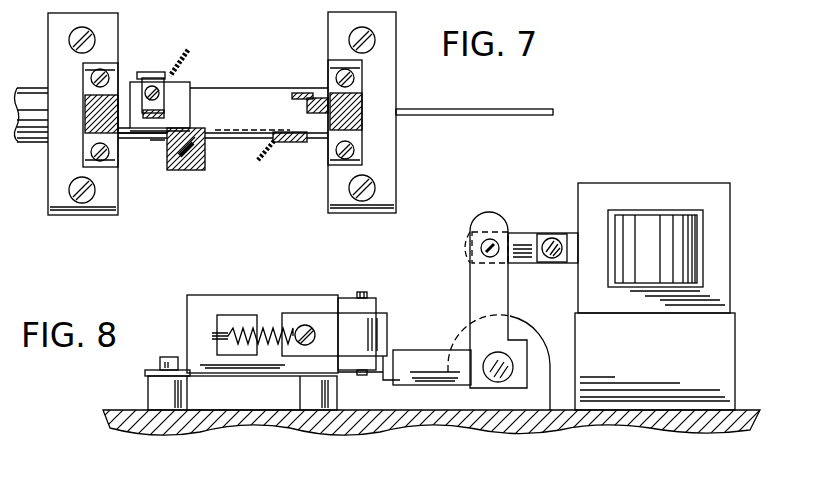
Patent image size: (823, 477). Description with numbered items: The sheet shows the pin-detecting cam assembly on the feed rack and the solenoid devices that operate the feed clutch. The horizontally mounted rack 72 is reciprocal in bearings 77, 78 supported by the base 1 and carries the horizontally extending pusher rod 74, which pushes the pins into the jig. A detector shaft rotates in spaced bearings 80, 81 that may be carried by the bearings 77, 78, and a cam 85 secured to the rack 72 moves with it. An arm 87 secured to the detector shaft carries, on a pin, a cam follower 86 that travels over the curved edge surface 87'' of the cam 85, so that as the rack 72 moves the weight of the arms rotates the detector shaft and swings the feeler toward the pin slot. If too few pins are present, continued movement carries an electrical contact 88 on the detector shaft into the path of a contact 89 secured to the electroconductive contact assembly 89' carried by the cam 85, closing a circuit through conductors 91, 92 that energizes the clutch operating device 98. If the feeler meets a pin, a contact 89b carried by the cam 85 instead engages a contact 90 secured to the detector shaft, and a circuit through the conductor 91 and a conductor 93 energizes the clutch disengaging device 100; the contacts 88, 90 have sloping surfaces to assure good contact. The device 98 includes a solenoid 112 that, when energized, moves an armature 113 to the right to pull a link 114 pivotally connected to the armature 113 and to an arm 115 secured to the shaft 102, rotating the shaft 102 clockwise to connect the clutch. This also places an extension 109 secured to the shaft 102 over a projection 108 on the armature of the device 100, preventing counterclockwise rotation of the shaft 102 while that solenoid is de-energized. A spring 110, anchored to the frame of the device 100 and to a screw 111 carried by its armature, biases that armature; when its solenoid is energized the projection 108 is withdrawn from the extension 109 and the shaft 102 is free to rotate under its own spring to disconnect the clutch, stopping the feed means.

In FIG. 8, the base 1 is at (160, 426).
In FIG. 7, the rack 72 is at (255, 80).
In FIG. 7, the pusher rod 74 is at (470, 118).
In FIG. 7, the bearing 77 is at (58, 187).
In FIG. 7, the bearing 78 is at (397, 167).
In FIG. 7, the bearing 80 is at (85, 110).
In FIG. 7, the bearing 81 is at (364, 112).
In FIG. 7, the cam 85 is at (190, 98).
In FIG. 7, the cam follower 86 is at (167, 158).
In FIG. 7, the arm 87 is at (186, 164).
In FIG. 7, the shoulder 87'' is at (142, 149).
In FIG. 7, the electrical contact 88 is at (290, 146).
In FIG. 7, the clamp 89 is at (177, 85).
In FIG. 7, the contact 89b is at (150, 72).
In FIG. 7, the electroconductive contact assembly 89' is at (186, 117).
In FIG. 7, the contact 90 is at (320, 97).
In FIG. 7, the conductor 91 is at (262, 157).
In FIG. 7, the conductor 92 is at (172, 70).
In FIG. 7, the conductor 93 is at (296, 90).
In FIG. 8, the clutch operating device 98 is at (655, 174).
In FIG. 8, the clutch disengaging device 100 is at (180, 297).
In FIG. 8, the shaft 102 is at (496, 352).
In FIG. 8, the projection 108 is at (384, 380).
In FIG. 8, the extension 109 is at (412, 350).
In FIG. 8, the spring 110 is at (264, 318).
In FIG. 8, the screw 111 is at (315, 336).
In FIG. 8, the solenoid 112 is at (591, 198).
In FIG. 8, the armature 113 is at (571, 262).
In FIG. 8, the link 114 is at (522, 240).
In FIG. 8, the arm 115 is at (480, 282).